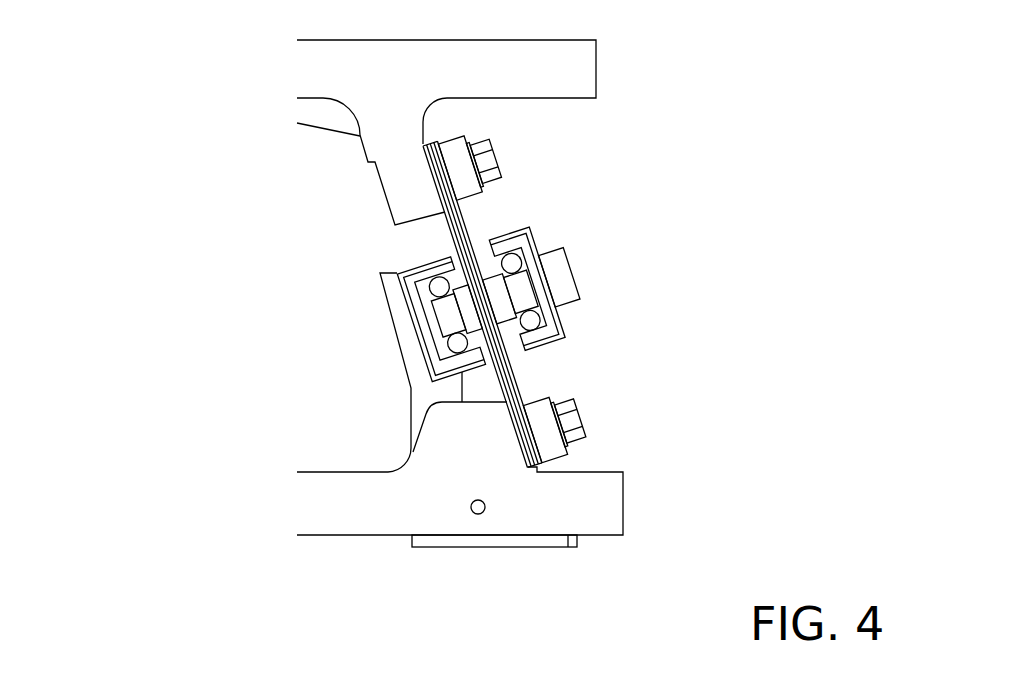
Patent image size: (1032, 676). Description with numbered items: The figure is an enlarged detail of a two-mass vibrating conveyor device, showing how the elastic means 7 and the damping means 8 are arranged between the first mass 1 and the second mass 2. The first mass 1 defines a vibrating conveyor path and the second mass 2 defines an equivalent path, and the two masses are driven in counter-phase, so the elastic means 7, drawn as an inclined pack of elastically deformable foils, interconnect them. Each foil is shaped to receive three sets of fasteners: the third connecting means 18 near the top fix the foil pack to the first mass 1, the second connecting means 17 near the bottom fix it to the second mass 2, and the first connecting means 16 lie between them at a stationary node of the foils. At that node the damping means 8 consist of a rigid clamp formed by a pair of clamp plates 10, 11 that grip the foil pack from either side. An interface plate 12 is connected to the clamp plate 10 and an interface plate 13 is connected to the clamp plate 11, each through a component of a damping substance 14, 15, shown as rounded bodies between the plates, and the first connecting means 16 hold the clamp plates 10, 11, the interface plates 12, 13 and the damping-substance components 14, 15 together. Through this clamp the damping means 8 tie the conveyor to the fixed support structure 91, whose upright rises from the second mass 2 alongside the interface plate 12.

The first mass 1 is at (560, 70).
The second mass 2 is at (498, 410).
The fixed support structure 91 is at (420, 420).
The elastic means 7 is at (458, 215).
The damping means 8 is at (380, 256).
The clamp plate 10 is at (465, 322).
The clamp plate 11 is at (508, 295).
The interface plate 12 is at (442, 360).
The interface plate 13 is at (533, 343).
The component of a damping substance 14 is at (457, 343).
The component of a damping substance 15 is at (510, 262).
The first connecting means 16 is at (563, 277).
The second connecting means 17 is at (570, 420).
The third connecting means 18 is at (487, 160).